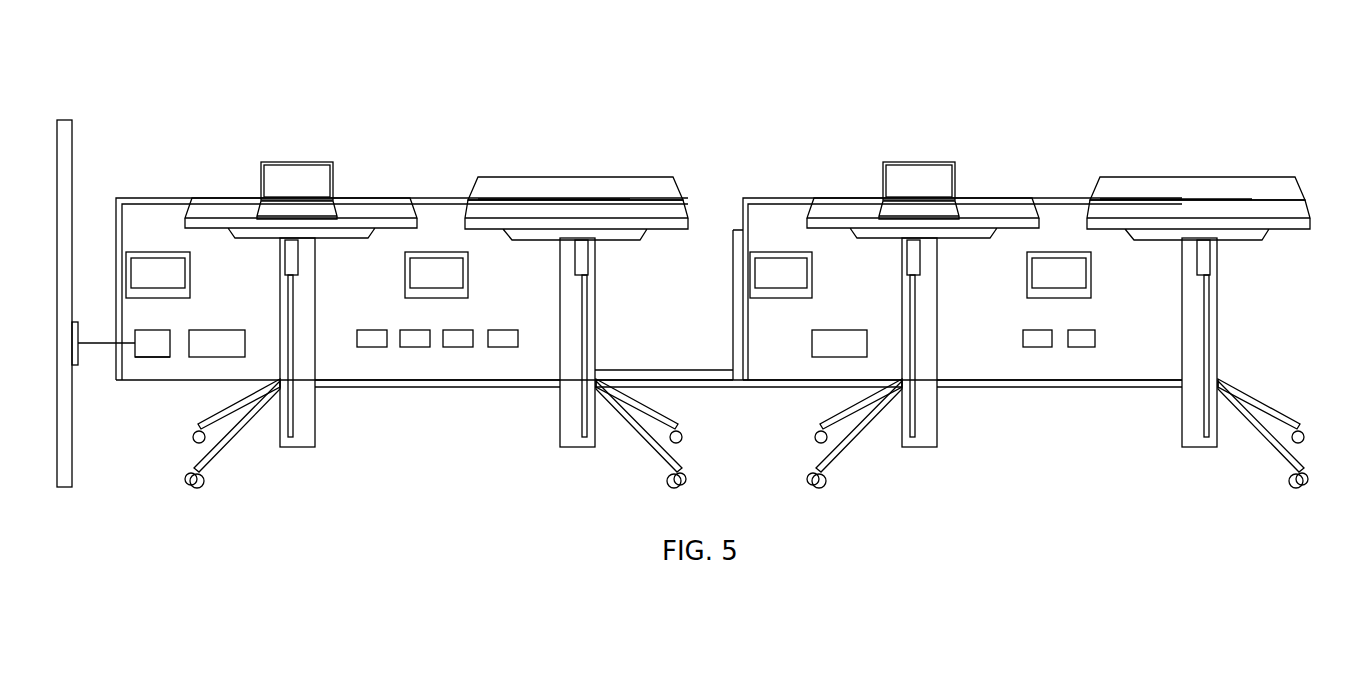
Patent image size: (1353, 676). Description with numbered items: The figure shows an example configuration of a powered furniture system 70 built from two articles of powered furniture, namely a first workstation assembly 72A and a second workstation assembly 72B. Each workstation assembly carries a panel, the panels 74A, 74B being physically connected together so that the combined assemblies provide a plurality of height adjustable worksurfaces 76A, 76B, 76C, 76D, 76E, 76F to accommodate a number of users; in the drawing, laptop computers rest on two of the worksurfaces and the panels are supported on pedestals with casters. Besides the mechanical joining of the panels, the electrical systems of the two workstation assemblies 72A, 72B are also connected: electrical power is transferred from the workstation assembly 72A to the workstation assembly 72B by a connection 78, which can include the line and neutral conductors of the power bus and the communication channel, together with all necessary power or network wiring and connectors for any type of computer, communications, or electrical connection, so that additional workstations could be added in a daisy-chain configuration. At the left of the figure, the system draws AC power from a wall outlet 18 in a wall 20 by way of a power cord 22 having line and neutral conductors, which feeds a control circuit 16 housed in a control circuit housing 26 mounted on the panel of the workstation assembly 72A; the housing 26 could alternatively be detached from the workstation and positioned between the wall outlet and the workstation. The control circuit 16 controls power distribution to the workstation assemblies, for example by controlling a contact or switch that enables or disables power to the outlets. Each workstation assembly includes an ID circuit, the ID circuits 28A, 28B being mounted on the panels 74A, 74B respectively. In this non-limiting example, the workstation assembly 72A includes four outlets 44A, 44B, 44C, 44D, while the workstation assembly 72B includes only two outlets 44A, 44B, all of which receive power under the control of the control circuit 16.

The powered furniture system 70 is at (1255, 89).
The workstation assembly 72A is at (248, 151).
The workstation assembly 72B is at (871, 151).
The panel 74A is at (485, 370).
The panel 74B is at (1068, 370).
The height adjustable worksurface 76A is at (383, 212).
The height adjustable worksurface 76B is at (583, 188).
The height adjustable worksurface 76C is at (663, 212).
The height adjustable worksurface 76D is at (1005, 212).
The height adjustable worksurface 76E is at (1205, 188).
The height adjustable worksurface 76F is at (1285, 212).
The connection 78 is at (686, 392).
The wall 20 is at (73, 153).
The power cord 22 is at (99, 341).
The wall outlet 18 is at (78, 355).
The control circuit 16 is at (150, 352).
The control circuit housing 26 is at (150, 330).
The ID circuit 28A is at (217, 330).
The ID circuit 28B is at (840, 329).
The outlet 44A is at (372, 329).
The outlet 44B is at (415, 348).
The outlet 44C is at (460, 329).
The outlet 44D is at (505, 348).